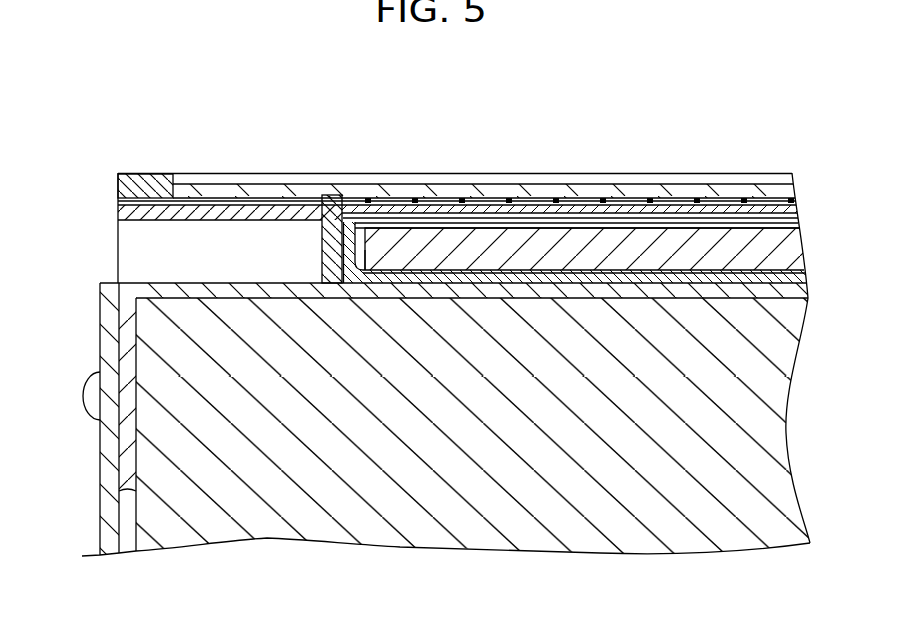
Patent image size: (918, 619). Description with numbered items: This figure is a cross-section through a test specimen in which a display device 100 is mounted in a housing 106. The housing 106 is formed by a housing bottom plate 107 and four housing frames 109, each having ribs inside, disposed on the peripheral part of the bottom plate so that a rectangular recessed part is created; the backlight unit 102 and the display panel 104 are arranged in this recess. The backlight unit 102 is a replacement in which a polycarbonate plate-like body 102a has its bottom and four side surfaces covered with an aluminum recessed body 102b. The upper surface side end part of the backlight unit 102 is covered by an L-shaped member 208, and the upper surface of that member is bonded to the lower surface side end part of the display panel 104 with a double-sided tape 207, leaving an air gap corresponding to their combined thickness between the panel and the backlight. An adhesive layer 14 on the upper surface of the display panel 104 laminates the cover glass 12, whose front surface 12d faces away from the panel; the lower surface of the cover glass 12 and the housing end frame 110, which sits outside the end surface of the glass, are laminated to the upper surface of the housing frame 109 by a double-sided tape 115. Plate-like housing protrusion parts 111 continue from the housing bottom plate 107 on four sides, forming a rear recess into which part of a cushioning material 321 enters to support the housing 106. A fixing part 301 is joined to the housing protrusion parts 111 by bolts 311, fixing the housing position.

The display device 100 is at (112, 155).
The housing end frame 110 is at (150, 174).
The double-sided tape 115 is at (206, 184).
The housing frame 109 is at (258, 198).
The L-shaped member 208 is at (339, 200).
The double-sided tape 207 is at (390, 226).
The housing bottom plate 107 is at (437, 243).
The cover glass 12 is at (482, 201).
The adhesive layer 14 is at (527, 201).
The display panel 104 is at (575, 213).
The backlight unit 102 is at (608, 245).
The plate-like body 102a is at (765, 250).
The recessed body 102b is at (730, 265).
The front surface 12d is at (690, 178).
The housing 106 is at (105, 210).
The housing protrusion part 111 is at (118, 336).
The bolt 311 is at (83, 393).
The fixing part 301 is at (110, 532).
The cushioning material 321 is at (325, 525).